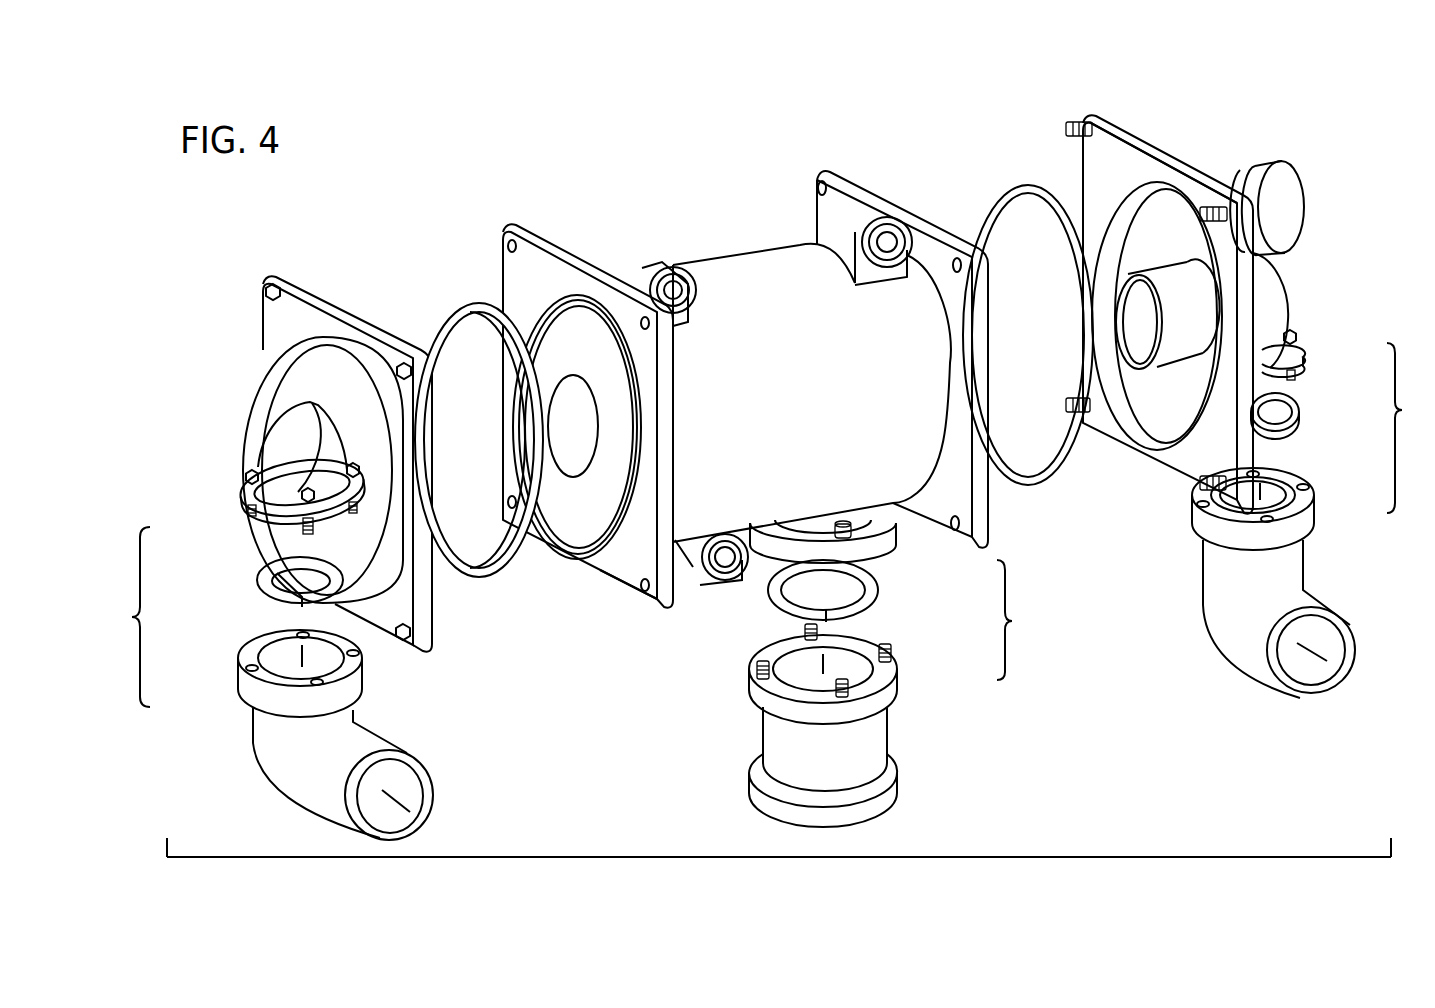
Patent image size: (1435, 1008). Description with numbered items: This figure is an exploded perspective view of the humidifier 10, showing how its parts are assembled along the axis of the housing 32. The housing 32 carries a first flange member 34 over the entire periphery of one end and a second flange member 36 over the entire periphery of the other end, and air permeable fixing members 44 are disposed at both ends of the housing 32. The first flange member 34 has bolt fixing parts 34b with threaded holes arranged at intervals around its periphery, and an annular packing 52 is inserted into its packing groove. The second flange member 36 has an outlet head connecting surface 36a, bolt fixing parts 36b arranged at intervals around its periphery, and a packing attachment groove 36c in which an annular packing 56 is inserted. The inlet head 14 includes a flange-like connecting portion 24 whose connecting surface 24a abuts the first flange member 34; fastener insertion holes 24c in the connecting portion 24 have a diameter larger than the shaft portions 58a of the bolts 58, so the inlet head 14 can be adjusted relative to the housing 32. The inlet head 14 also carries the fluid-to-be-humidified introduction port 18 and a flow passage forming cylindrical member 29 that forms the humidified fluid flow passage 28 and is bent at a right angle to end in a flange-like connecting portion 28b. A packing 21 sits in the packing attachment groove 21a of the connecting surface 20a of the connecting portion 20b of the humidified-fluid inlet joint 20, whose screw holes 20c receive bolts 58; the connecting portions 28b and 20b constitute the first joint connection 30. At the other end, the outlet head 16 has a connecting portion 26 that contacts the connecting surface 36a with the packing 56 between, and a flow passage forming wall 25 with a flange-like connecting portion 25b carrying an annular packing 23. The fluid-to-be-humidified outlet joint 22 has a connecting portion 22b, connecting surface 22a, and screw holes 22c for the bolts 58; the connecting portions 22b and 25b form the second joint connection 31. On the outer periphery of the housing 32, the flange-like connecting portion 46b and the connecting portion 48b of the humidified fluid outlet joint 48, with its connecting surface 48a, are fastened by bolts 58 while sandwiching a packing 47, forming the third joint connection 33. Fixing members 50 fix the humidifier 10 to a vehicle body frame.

The humidifier 10 is at (532, 169).
The inlet head 14 is at (1116, 112).
The outlet head 16 is at (266, 327).
The fluid-to-be-humidified introduction port 18 is at (1280, 183).
The humidified-fluid inlet joint 20 is at (1258, 562).
The connecting surface 20a is at (1273, 470).
The connecting portion 20b is at (1315, 508).
The screw holes 20c is at (1198, 499).
The packing 21 is at (1300, 411).
The packing attachment groove 21a is at (1300, 477).
The fluid-to-be-humidified outlet joint 22 is at (292, 728).
The connecting surface 22a is at (255, 652).
The connecting portion 22b is at (252, 681).
The screw holes 22c is at (310, 684).
The packing 23 is at (260, 583).
The connecting portion (main inlet flange) 24 is at (1097, 175).
The connecting surface 24a is at (1153, 163).
The fastener insertion holes 24c is at (1207, 203).
The flow passage forming wall 25 is at (287, 428).
The connecting portion 25b is at (272, 497).
The connecting portion 26 is at (330, 305).
The humidified fluid flow passage 28 is at (1145, 340).
The connecting portion 28b is at (1305, 357).
The flow passage forming cylindrical member 29 is at (1180, 273).
The first joint connection 30 is at (1410, 428).
The second joint connection 31 is at (128, 617).
The housing 32 is at (787, 250).
The third joint connection 33 is at (1021, 620).
The first flange member 34 is at (923, 222).
The bolt fixing parts 34b is at (952, 270).
The second flange member 36 is at (549, 258).
The outlet head connecting surface 36a is at (624, 572).
The bolt fixing parts 36b is at (508, 242).
The packing attachment groove 36c is at (558, 295).
The fixing members 44 is at (578, 528).
The connecting portion 46b is at (880, 543).
The packing 47 is at (872, 593).
The humidified fluid outlet joint 48 is at (857, 731).
The connecting surface 48a is at (865, 698).
The connecting portion 48b is at (890, 690).
The fixing members 50 is at (667, 288).
The packing 52 is at (990, 193).
The packing 56 is at (458, 300).
The bolts 58 is at (228, 449).
The shaft portions 58a is at (243, 481).